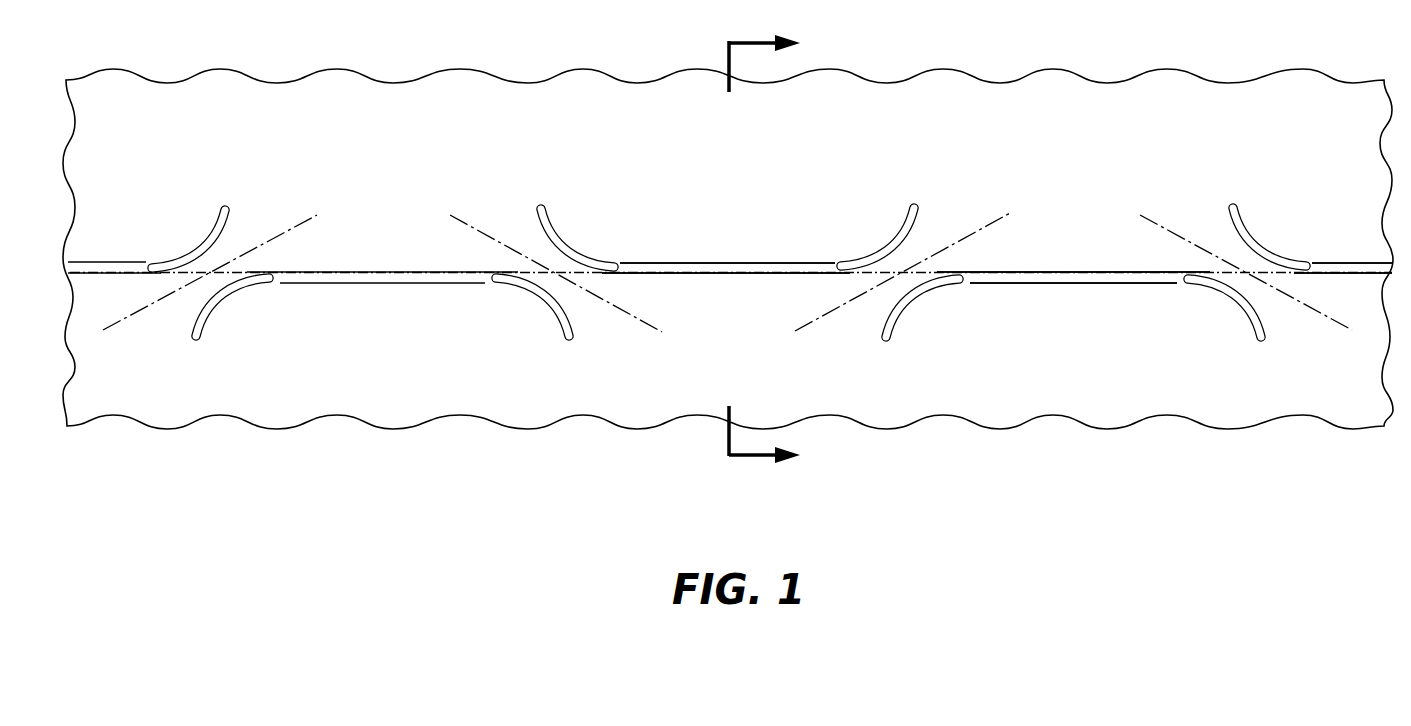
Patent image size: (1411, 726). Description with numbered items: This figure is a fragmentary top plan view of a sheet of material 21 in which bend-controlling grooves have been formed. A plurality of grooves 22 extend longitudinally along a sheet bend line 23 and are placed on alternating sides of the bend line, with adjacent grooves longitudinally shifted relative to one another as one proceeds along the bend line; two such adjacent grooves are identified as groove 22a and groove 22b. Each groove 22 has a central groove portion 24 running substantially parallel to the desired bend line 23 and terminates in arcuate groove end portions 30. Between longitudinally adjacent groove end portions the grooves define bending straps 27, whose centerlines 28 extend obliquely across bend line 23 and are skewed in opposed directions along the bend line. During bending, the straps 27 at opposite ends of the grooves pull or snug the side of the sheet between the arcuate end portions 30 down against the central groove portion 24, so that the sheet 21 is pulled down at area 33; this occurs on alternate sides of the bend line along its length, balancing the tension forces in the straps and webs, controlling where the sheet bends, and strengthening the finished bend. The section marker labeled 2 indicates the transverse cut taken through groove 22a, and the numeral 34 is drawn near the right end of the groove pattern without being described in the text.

The sheet of material 21 is at (178, 409).
The grooves 22 is at (186, 333).
The groove 22a is at (731, 251).
The groove 22b is at (1100, 295).
The sheet bend line 23 is at (262, 270).
The central groove portion 24 is at (346, 283).
The bending strap 27 is at (206, 284).
The centerlines 28 is at (325, 228).
The arcuate groove end portions 30 is at (216, 215).
The area 33 is at (373, 260).
The strip end 34 is at (1363, 286).
The section line 2- 2 is at (776, 250).